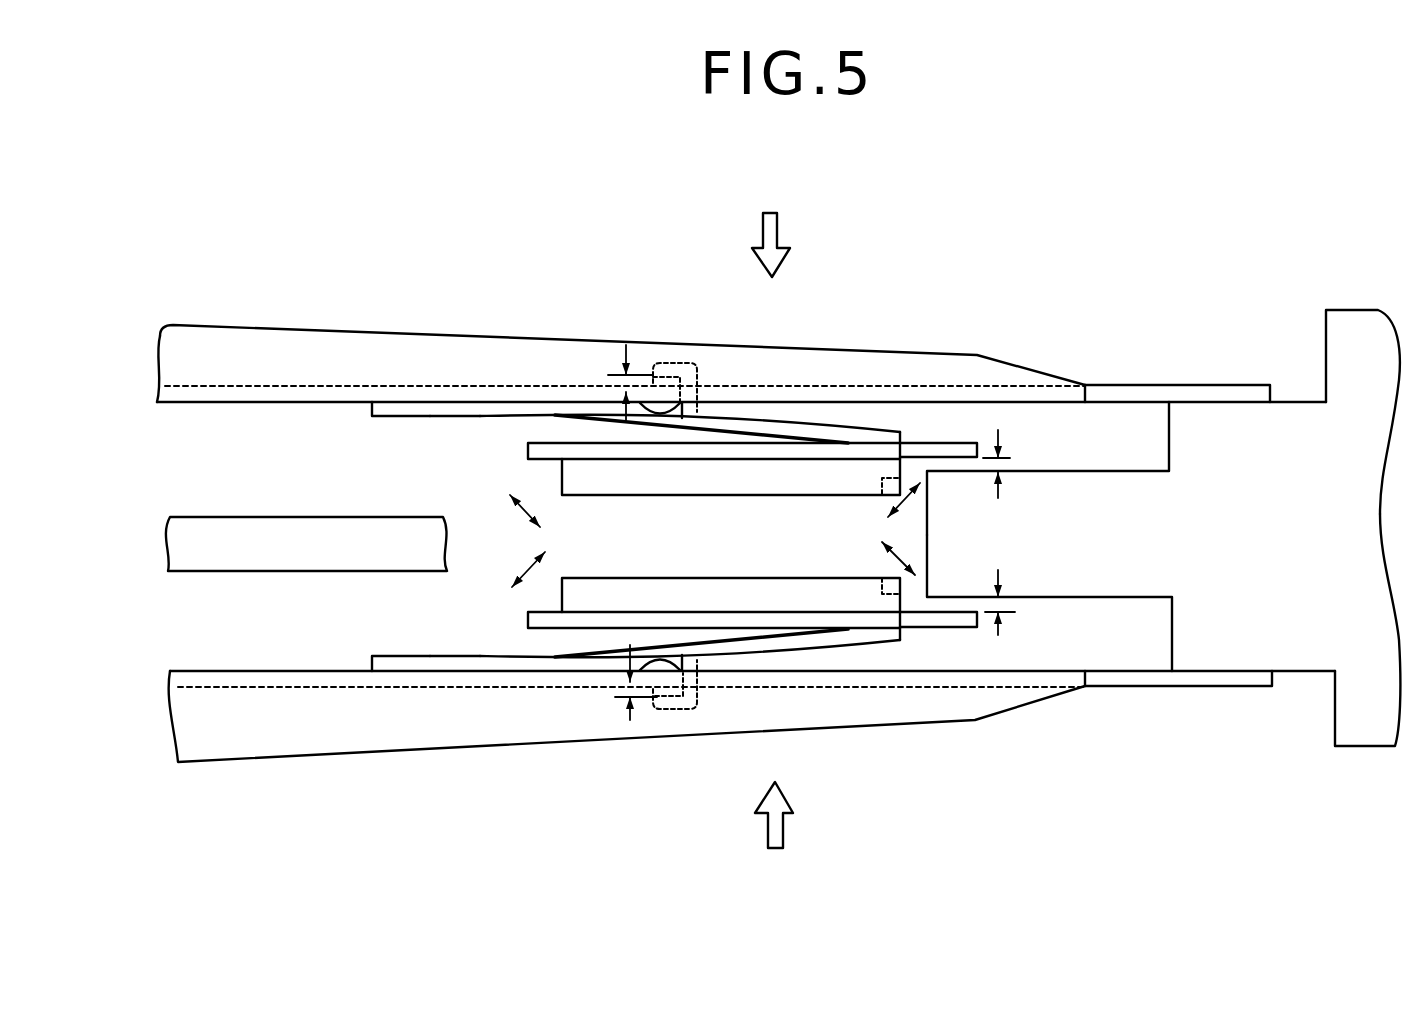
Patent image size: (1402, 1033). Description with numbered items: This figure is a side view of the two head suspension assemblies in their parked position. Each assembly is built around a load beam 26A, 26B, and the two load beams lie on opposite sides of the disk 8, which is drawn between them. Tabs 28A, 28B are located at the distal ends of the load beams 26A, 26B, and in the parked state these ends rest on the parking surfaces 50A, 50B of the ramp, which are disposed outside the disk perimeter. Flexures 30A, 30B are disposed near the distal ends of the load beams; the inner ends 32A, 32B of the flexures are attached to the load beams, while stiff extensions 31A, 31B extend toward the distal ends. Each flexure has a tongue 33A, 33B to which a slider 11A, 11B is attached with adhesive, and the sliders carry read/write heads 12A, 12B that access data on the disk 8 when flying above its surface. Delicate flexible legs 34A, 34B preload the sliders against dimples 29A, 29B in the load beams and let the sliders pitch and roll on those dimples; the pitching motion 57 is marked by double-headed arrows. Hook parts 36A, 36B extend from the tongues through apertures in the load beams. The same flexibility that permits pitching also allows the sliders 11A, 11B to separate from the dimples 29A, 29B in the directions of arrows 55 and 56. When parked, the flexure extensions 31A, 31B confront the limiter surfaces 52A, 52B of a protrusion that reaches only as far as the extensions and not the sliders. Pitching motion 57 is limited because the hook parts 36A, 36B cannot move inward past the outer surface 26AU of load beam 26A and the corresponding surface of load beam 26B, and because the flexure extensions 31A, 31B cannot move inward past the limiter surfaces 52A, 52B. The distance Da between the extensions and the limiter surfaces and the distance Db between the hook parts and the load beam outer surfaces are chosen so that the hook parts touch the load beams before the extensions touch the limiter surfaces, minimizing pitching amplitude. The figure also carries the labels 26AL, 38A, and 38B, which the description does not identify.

The disk 8 is at (257, 538).
The slider 11A is at (612, 475).
The slider 11B is at (680, 593).
The read/write head 12A is at (882, 492).
The read/write head 12B is at (882, 580).
The load beam 26A is at (327, 345).
The outer surface of load beam 26AU is at (240, 386).
The lower layer of arm 26A 26AL is at (222, 403).
The load beam 26B is at (363, 733).
The tab 28A is at (1195, 385).
The tab 28B is at (1227, 687).
The dimple 29A is at (700, 418).
The dimple 29B is at (705, 655).
The flexure 30A is at (503, 420).
The flexure 30B is at (488, 652).
The stiff extension of flexure 31A is at (935, 450).
The stiff extension of flexure 31B is at (955, 620).
The inner end of flexure 32A is at (447, 417).
The inner end of flexure 32B is at (397, 663).
The tongue 33A is at (677, 462).
The tongue 33B is at (633, 612).
The flexible leg 34A is at (800, 427).
The flexible leg 34B is at (825, 635).
The hook part 36A is at (660, 363).
The hook part 36B is at (657, 712).
The upper tip portion 38A is at (878, 440).
The lower tip portion 38B is at (882, 628).
The parking surface 50A is at (1307, 398).
The parking surface 50B is at (1305, 668).
The limiter surface 52A is at (1133, 470).
The limiter surface 52B is at (1141, 598).
The arrow 55 is at (778, 232).
The arrow 56 is at (783, 828).
The pitching motion 57 is at (520, 512).
The distance between flexure extensions and limiter surfaces Da is at (1003, 462).
The distance between hook parts and load beam outer surfaces Db is at (612, 376).